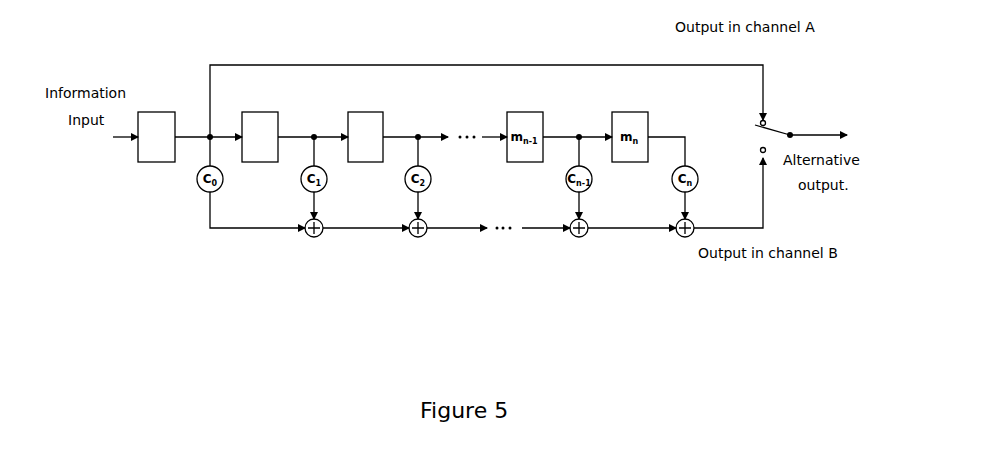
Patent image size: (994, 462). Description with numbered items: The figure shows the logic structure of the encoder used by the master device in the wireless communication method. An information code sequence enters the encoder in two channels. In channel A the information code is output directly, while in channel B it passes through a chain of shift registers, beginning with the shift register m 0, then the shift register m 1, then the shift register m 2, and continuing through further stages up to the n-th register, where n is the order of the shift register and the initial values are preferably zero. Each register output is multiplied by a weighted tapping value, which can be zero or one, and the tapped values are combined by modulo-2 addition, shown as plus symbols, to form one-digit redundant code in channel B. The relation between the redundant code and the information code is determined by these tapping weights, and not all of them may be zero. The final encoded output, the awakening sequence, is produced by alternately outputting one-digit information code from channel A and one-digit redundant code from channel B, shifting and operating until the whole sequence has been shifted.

The shift register m0 0 is at (156, 137).
The shift register m1 1 is at (260, 137).
The shift register m2 2 is at (365, 137).